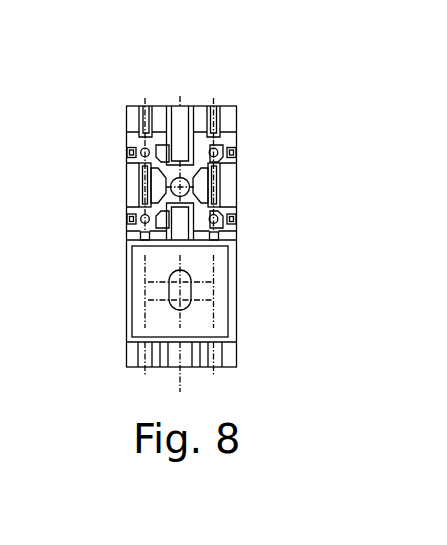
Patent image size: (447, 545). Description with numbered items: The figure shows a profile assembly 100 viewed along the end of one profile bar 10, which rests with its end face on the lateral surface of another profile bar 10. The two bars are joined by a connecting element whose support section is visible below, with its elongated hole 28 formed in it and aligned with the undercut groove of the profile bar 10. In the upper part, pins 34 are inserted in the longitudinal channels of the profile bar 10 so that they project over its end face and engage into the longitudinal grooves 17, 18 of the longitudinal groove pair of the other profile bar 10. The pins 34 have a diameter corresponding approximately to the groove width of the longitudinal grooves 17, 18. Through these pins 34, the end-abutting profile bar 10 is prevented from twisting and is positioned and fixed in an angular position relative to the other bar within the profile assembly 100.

The profile assembly 100 is at (177, 208).
The profile bar 10 is at (241, 167).
The longitudinal groove 17 is at (145, 104).
The longitudinal groove 18 is at (216, 104).
The pin 34 is at (142, 150).
The elongated hole 28 is at (185, 290).